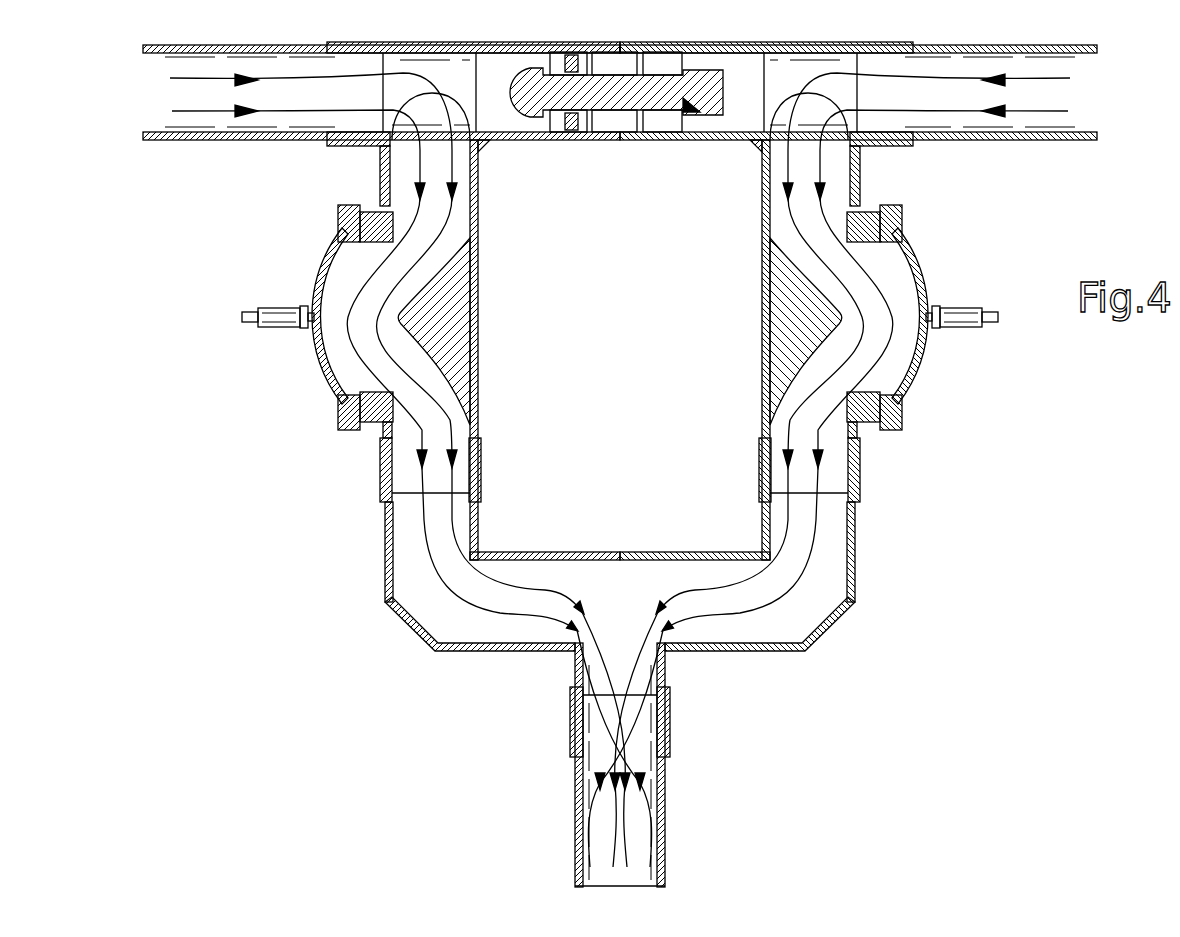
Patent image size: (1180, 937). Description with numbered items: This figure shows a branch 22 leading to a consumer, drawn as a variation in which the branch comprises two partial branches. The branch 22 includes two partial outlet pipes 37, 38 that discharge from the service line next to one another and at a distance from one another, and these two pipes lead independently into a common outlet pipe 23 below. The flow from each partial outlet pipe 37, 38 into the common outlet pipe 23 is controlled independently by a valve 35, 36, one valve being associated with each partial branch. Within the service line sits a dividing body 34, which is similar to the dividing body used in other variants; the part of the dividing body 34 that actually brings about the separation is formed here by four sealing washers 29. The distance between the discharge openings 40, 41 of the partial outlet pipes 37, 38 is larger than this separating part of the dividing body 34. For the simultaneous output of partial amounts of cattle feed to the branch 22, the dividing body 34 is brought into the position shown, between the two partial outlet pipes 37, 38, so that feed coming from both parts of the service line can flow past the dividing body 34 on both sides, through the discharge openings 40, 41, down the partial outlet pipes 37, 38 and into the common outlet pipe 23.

The branch 22 is at (810, 35).
The common outlet pipe 23 is at (668, 790).
The sealing washers 29 is at (675, 138).
The dividing body 34 is at (613, 67).
The valve 35 is at (328, 377).
The valve 36 is at (917, 255).
The partial outlet pipe 37 is at (383, 545).
The partial outlet pipe 38 is at (858, 535).
The discharge opening 40 is at (483, 143).
The discharge opening 41 is at (757, 145).